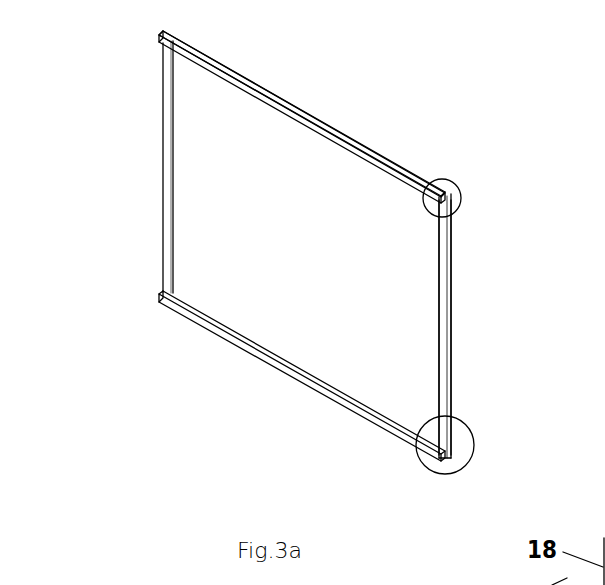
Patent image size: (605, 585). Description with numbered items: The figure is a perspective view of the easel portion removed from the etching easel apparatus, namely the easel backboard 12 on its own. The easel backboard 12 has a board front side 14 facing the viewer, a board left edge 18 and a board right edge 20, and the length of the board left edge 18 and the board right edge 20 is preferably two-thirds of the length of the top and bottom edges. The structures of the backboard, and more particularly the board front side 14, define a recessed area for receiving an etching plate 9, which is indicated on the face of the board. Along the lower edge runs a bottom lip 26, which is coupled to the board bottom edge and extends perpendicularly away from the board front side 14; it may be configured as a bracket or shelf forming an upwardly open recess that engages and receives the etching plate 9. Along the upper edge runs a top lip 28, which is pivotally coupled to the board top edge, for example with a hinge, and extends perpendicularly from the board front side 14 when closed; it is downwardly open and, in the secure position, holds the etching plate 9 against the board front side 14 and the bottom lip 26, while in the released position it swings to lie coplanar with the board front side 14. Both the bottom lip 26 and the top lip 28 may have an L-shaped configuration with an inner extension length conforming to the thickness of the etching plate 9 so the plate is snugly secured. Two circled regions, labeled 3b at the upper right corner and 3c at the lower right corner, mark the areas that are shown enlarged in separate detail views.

The easel backboard 12 is at (150, 112).
The etching plate 9 is at (318, 230).
The board front side 14 is at (443, 330).
The board left edge 18 is at (163, 201).
The board right edge 20 is at (451, 273).
The bottom lip 26 is at (292, 373).
The top lip 28 is at (338, 137).
The detail view region 3b is at (458, 190).
The detail view region 3c is at (468, 425).